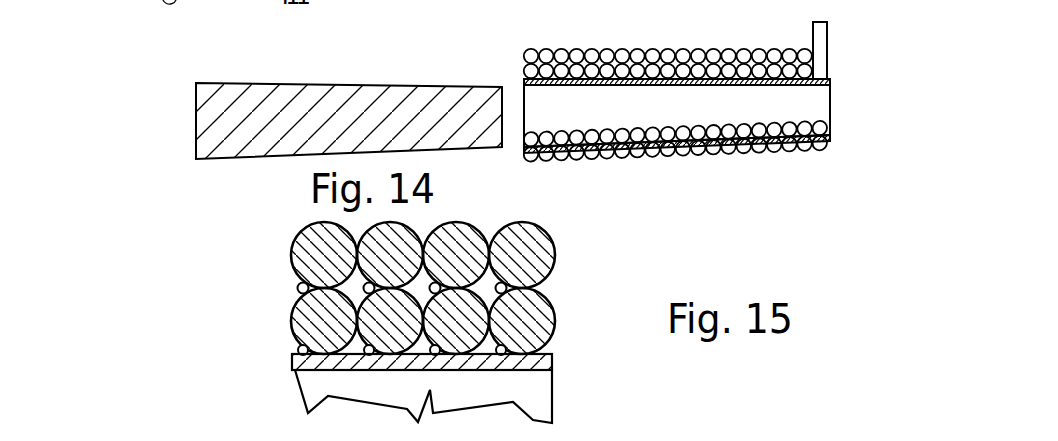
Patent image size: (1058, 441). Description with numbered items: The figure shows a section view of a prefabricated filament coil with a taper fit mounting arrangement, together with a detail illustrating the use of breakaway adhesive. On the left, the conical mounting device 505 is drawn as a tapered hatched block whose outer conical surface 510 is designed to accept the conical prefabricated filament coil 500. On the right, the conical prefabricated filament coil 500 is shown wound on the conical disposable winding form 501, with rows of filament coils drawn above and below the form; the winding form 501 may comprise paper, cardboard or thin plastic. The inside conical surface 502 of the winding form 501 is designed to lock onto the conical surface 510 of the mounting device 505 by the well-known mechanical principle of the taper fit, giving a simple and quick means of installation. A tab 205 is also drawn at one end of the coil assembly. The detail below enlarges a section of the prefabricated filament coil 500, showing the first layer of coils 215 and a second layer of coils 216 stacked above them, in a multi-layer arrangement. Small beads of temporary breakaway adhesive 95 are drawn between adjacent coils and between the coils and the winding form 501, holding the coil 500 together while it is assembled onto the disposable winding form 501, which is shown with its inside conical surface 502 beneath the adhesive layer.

In FIG. 15, the breakaway adhesive 95 is at (297, 289).
In FIG. 14, the tab 205 is at (818, 22).
In FIG. 15, the first layer of coils 215 is at (548, 300).
In FIG. 15, the second layer of coils 216 is at (546, 233).
In FIG. 14, the conical prefabricated filament coil 500 is at (728, 50).
In FIG. 14, the conical disposable winding form 501 is at (831, 123).
In FIG. 15, the conical disposable winding form 501 is at (553, 363).
In FIG. 14, the inside conical surface 502 is at (800, 86).
In FIG. 15, the inside conical surface 502 is at (553, 408).
In FIG. 14, the conical mounting device 505 is at (195, 118).
In FIG. 14, the conical surface 510 is at (364, 83).